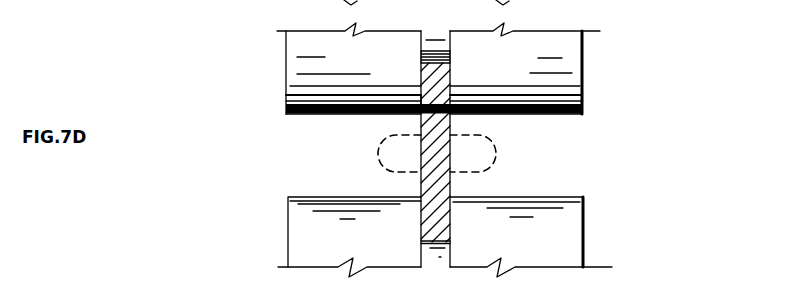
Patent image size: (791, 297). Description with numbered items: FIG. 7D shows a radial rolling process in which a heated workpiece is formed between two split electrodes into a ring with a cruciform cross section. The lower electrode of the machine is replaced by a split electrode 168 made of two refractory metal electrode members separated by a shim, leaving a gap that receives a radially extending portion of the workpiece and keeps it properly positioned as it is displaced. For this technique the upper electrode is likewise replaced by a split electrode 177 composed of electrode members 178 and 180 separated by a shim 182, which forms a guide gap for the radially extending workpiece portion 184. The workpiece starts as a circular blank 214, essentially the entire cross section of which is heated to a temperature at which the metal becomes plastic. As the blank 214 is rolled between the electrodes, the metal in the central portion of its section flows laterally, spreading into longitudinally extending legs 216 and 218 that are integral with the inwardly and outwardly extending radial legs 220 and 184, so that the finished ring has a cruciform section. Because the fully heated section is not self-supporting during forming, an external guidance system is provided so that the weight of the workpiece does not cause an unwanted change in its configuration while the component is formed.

The split electrode 177 is at (590, 64).
The split electrode 168 is at (590, 233).
The electrode member 178 is at (286, 100).
The electrode member 180 is at (584, 103).
The shim 182 is at (451, 55).
The radially extending workpiece portion 184 is at (446, 94).
The circular blank 214 is at (419, 102).
The longitudinally extending leg 216 is at (378, 153).
The longitudinally extending leg 218 is at (497, 152).
The radial leg 220 is at (427, 223).